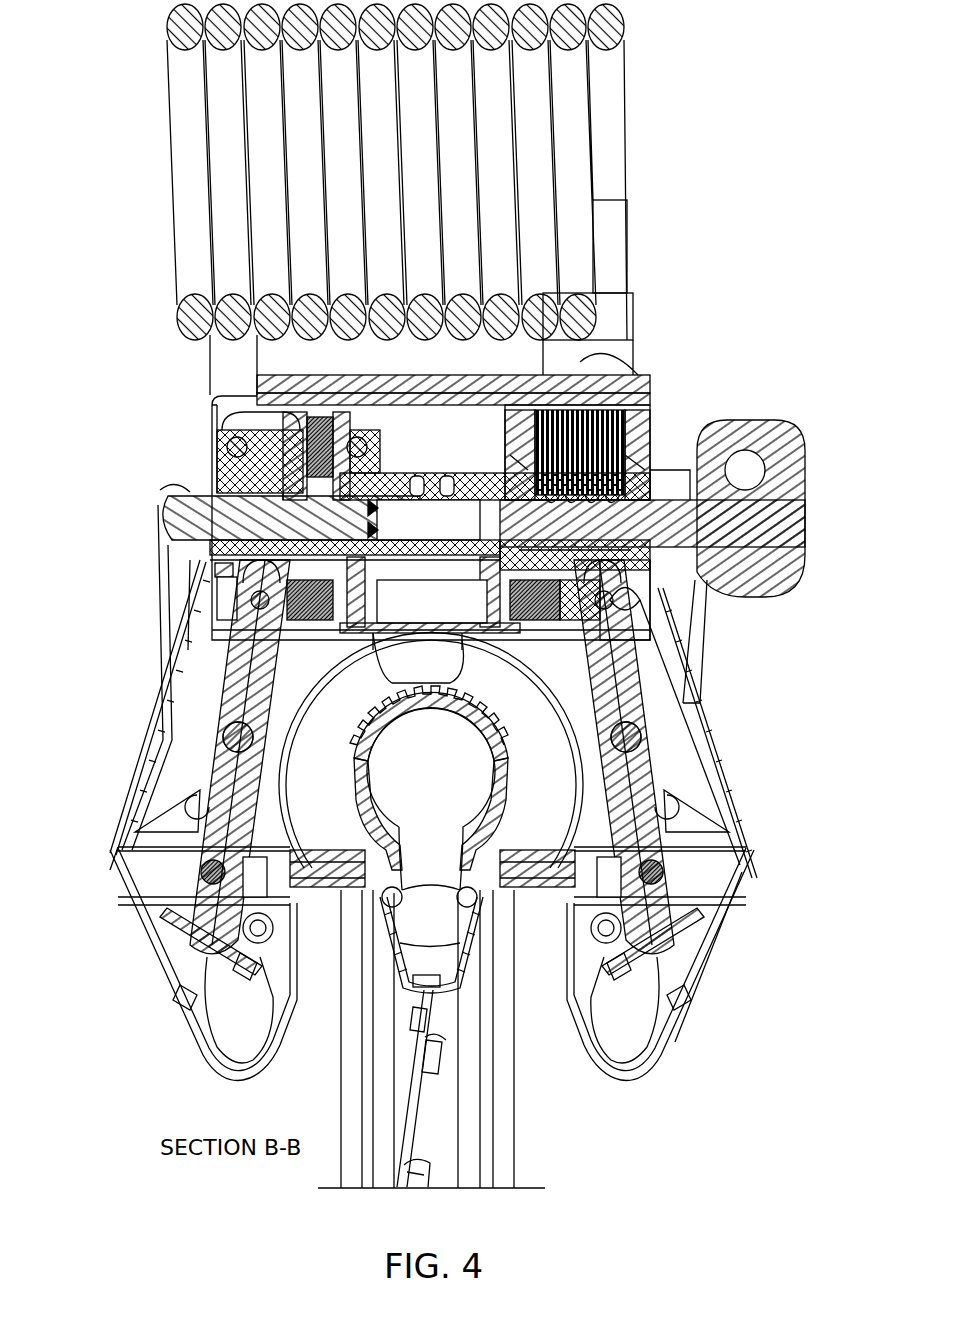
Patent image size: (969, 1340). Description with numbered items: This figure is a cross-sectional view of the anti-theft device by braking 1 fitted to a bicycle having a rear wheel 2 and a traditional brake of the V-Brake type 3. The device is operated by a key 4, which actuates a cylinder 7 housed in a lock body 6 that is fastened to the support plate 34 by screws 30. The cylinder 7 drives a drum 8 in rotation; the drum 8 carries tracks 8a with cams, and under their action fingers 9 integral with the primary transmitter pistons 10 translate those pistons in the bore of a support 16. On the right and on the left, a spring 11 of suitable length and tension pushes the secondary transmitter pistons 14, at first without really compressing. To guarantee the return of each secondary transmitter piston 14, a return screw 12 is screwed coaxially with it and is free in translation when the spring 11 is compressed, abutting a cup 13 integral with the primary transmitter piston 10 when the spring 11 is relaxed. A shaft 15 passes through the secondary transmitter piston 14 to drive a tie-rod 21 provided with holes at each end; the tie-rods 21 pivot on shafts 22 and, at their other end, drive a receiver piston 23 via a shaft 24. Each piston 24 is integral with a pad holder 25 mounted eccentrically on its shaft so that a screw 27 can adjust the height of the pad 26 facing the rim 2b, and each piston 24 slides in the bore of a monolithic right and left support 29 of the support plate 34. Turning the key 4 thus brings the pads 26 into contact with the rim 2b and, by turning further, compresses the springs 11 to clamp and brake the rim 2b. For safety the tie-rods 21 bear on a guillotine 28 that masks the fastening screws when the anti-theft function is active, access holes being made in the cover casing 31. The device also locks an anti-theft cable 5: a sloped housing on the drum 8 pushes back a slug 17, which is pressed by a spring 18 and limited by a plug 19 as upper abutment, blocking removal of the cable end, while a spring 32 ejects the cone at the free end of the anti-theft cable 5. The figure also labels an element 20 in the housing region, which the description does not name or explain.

The anti-theft device by braking 1 is at (95, 648).
The rear wheel 2 is at (495, 1142).
The rim 2b is at (512, 1085).
The brake of the V-Brake type 3 is at (322, 905).
The key 4 is at (780, 470).
The anti-theft cable 5 is at (612, 178).
The lock body 6 is at (640, 428).
The cylinder 7 is at (650, 500).
The drum 8 is at (440, 630).
The tracks 8a is at (448, 478).
The fingers 9 is at (479, 628).
The primary transmitter pistons 10 is at (525, 600).
The spring 11 is at (565, 605).
The return screw 12 is at (368, 585).
The cup 13 is at (318, 605).
The secondary transmitter pistons 14 is at (294, 605).
The shaft 15 is at (612, 612).
The support 16 is at (300, 632).
The slug 17 is at (217, 470).
The spring 18 is at (235, 445).
The plug 19 is at (305, 418).
The plate 20 is at (236, 553).
The tie-rods 21 is at (628, 700).
The shafts 22 is at (225, 735).
The receiver piston 23 is at (545, 850).
The shaft 24 is at (185, 868).
The pad holder 25 is at (490, 1000).
The pads 26 is at (342, 955).
The screw 27 is at (312, 850).
The guillotine 28 is at (625, 1028).
The right and left support 29 is at (566, 914).
The screws 30 is at (632, 462).
The cover casing 31 is at (715, 952).
The spring 32 is at (380, 526).
The support plate 34 is at (672, 768).